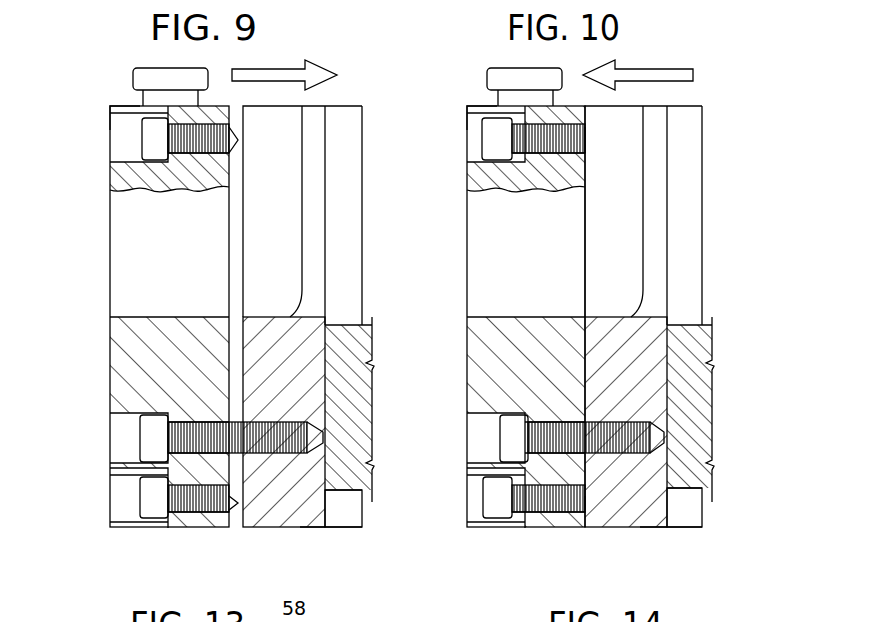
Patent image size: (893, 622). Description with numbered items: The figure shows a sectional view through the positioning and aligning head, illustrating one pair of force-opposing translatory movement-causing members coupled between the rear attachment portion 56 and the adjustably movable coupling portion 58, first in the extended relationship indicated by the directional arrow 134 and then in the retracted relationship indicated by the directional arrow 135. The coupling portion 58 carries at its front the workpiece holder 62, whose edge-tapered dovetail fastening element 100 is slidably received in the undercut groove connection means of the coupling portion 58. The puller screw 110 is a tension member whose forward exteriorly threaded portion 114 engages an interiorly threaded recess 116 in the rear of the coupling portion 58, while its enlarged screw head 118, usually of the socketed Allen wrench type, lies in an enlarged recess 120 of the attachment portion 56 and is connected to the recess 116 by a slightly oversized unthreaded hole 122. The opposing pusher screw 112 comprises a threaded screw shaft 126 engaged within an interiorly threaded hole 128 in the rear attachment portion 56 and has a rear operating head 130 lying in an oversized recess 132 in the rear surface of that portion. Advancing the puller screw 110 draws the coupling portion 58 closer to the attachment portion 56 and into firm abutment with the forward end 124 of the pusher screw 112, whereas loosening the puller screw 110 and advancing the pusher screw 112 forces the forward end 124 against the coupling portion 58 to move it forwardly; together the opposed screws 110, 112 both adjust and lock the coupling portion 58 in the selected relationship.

In FIG. 9, the rear attachment portion 56 is at (108, 99).
In FIG. 10, the rear attachment portion 56 is at (465, 99).
In FIG. 9, the coupling portion 58 is at (336, 539).
In FIG. 10, the coupling portion 58 is at (671, 540).
In FIG. 9, the workpiece holder 62 is at (369, 509).
In FIG. 10, the workpiece holder 62 is at (711, 510).
In FIG. 9, the dovetail fastening element 100 is at (372, 340).
In FIG. 10, the dovetail fastening element 100 is at (713, 338).
In FIG. 9, the puller screw 110 is at (253, 410).
In FIG. 10, the puller screw 110 is at (602, 410).
In FIG. 9, the pusher screw 112 is at (179, 165).
In FIG. 10, the pusher screw 112 is at (530, 168).
In FIG. 9, the forward exteriorly threaded portion 114 is at (283, 452).
In FIG. 10, the forward exteriorly threaded portion 114 is at (632, 455).
In FIG. 9, the interiorly threaded recess 116 is at (310, 432).
In FIG. 10, the interiorly threaded recess 116 is at (658, 430).
In FIG. 9, the screw head 118 is at (140, 446).
In FIG. 10, the screw head 118 is at (500, 446).
In FIG. 9, the enlarged recess 120 is at (140, 413).
In FIG. 10, the enlarged recess 120 is at (497, 414).
In FIG. 9, the unthreaded hole 122 is at (190, 420).
In FIG. 10, the unthreaded hole 122 is at (547, 420).
In FIG. 9, the forward end 124 is at (240, 142).
In FIG. 10, the forward end 124 is at (582, 152).
In FIG. 9, the threaded screw shaft 126 is at (212, 152).
In FIG. 10, the threaded screw shaft 126 is at (565, 158).
In FIG. 9, the interiorly threaded hole 128 is at (229, 128).
In FIG. 10, the interiorly threaded hole 128 is at (575, 128).
In FIG. 9, the rear operating head 130 is at (140, 140).
In FIG. 10, the rear operating head 130 is at (482, 142).
In FIG. 9, the oversized recess 132 is at (137, 115).
In FIG. 10, the oversized recess 132 is at (477, 115).
In FIG. 9, the directional arrow 134 is at (273, 69).
In FIG. 10, the directional arrow 135 is at (648, 69).